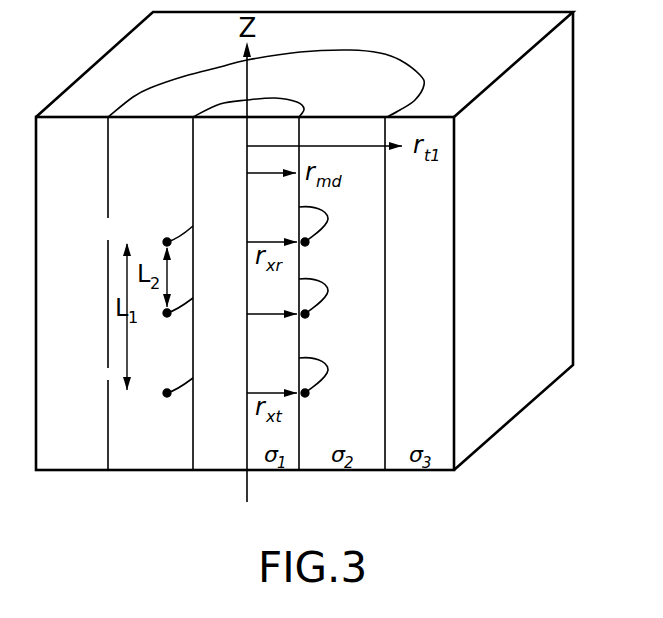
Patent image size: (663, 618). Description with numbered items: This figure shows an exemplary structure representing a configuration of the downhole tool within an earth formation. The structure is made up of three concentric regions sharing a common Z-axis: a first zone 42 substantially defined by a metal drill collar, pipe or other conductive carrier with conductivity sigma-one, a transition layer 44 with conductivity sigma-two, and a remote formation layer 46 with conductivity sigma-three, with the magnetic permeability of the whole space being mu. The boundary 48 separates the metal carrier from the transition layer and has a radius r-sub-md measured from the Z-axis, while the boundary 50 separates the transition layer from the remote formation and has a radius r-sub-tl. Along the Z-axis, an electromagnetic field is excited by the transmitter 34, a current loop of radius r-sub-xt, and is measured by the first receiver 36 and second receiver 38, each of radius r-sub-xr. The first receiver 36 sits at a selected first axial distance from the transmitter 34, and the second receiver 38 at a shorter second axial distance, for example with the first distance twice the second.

The transmitter 34 is at (327, 222).
The first receiver 36 is at (327, 373).
The second receiver 38 is at (327, 294).
The first zone 42 is at (272, 472).
The transition layer 44 is at (345, 472).
The remote formation layer 46 is at (421, 472).
The boundary 48 is at (302, 99).
The boundary 50 is at (358, 52).